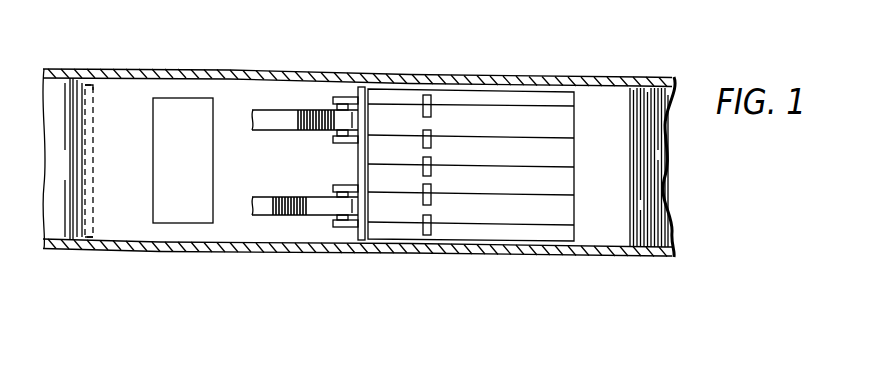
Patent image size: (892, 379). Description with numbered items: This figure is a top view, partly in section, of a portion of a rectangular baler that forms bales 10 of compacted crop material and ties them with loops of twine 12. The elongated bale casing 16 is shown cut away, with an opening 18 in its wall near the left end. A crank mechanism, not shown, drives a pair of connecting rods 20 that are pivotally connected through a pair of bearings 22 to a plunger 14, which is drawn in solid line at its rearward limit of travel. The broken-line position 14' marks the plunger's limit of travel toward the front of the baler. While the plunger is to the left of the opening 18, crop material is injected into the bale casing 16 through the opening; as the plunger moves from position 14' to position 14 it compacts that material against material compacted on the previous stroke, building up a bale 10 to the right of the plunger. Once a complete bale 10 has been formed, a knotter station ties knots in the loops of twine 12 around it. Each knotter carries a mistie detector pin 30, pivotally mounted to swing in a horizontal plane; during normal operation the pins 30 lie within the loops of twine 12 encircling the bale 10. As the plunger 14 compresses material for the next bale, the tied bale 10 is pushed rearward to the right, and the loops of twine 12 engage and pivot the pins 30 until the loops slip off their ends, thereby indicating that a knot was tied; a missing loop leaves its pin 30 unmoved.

The bale 10 is at (545, 217).
The loops of twine 12 is at (557, 110).
The plunger 14 is at (346, 141).
The plunger forward position 14' is at (106, 136).
The bale casing 16 is at (658, 224).
The opening 18 is at (153, 166).
The connecting rods 20 is at (255, 130).
The bearings 22 is at (347, 146).
The mistie detector pin 30 is at (435, 95).